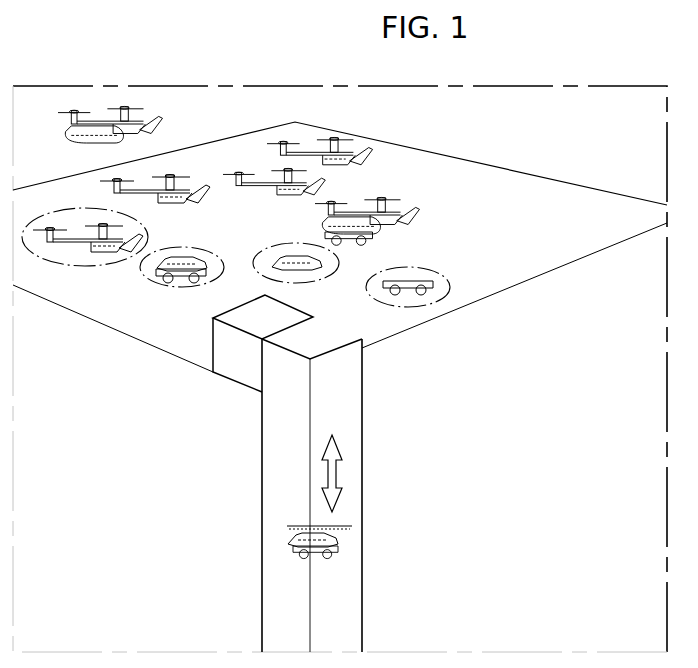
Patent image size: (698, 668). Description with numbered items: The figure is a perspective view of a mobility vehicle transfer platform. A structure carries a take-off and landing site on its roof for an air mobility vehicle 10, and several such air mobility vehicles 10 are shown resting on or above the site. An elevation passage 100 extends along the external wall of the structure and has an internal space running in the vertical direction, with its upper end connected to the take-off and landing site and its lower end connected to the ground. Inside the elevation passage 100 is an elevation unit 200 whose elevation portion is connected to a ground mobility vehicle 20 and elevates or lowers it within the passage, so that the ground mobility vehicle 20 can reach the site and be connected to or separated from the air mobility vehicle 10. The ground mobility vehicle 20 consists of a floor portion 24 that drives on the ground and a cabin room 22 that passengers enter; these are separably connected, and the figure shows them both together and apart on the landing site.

The air mobility vehicle 10 is at (112, 268).
The ground mobility vehicle 20 is at (200, 250).
The cabin room 22 is at (282, 246).
The floor portion 24 is at (430, 270).
The elevation passage 100 is at (362, 600).
The elevation unit 200 is at (352, 526).